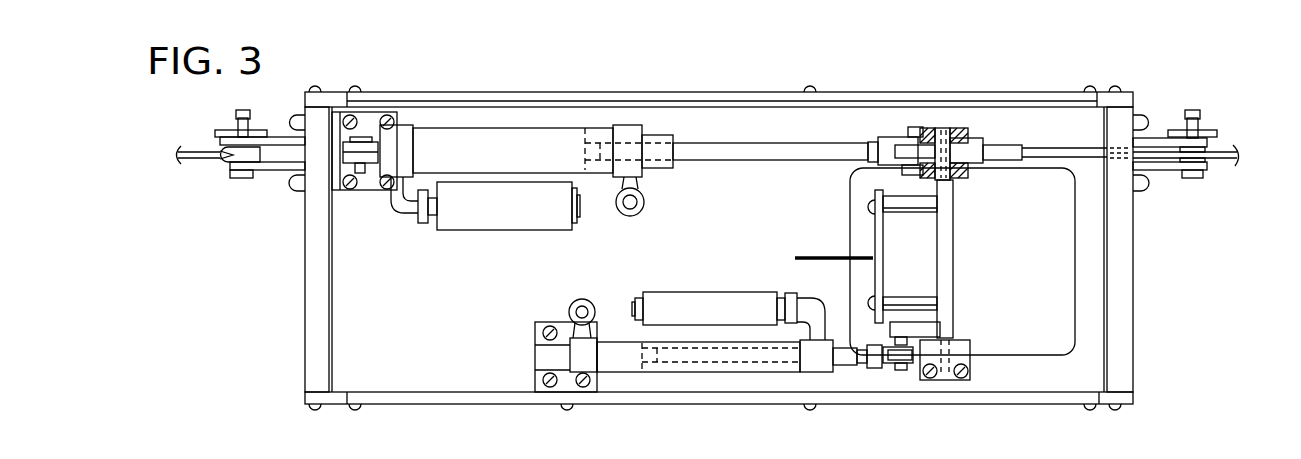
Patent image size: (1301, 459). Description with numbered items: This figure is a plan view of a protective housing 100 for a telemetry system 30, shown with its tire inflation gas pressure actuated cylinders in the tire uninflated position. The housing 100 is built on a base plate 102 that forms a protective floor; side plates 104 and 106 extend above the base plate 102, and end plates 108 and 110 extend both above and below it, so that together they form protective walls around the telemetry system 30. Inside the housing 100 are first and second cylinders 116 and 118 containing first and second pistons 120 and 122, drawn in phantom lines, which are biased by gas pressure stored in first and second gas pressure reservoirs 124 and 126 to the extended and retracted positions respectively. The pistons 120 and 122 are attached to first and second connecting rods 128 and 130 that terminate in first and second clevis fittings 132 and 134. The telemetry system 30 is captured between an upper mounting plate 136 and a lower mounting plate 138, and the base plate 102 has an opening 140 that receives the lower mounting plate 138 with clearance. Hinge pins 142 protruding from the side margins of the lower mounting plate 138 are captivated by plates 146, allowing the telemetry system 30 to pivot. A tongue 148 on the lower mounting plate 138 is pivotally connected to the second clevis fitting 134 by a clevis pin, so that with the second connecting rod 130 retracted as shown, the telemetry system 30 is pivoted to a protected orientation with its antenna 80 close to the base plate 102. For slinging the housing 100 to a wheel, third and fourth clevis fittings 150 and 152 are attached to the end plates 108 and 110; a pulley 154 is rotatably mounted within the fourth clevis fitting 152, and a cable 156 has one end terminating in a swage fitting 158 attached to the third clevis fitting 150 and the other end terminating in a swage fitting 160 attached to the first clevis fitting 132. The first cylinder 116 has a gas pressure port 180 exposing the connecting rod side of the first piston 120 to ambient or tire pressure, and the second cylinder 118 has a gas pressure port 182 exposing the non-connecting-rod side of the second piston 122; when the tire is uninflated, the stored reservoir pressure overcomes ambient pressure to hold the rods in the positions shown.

The telemetry system 30 is at (920, 250).
The antenna 80 is at (813, 257).
The protective housing 100 is at (1054, 75).
The base plate 102 is at (430, 327).
The side plate 104 is at (655, 101).
The side plate 106 is at (628, 404).
The end plate 108 is at (315, 295).
The end plate 110 is at (1115, 268).
The first cylinder 116 is at (474, 127).
The second cylinder 118 is at (700, 372).
The first piston 120 is at (597, 127).
The second piston 122 is at (650, 345).
The first gas pressure reservoir 124 is at (490, 212).
The second gas pressure reservoir 126 is at (697, 306).
The first connecting rod 128 is at (721, 152).
The second connecting rod 130 is at (868, 362).
The first clevis fitting 132 is at (886, 145).
The second clevis fitting 134 is at (880, 362).
The upper mounting plate 136 is at (876, 212).
The lower mounting plate 138 is at (946, 214).
The opening 140 is at (1060, 316).
The hinge pins 142 is at (948, 128).
The plates 146 is at (968, 358).
The tongue 148 is at (929, 322).
The third clevis fitting 150 is at (283, 171).
The fourth clevis fitting 152 is at (1158, 171).
The pulley 154 is at (1212, 147).
The cable 156 is at (200, 160).
The swage fitting 158 is at (218, 152).
The swage fitting 160 is at (975, 148).
The gas pressure port 180 is at (632, 212).
The gas pressure port 182 is at (582, 299).